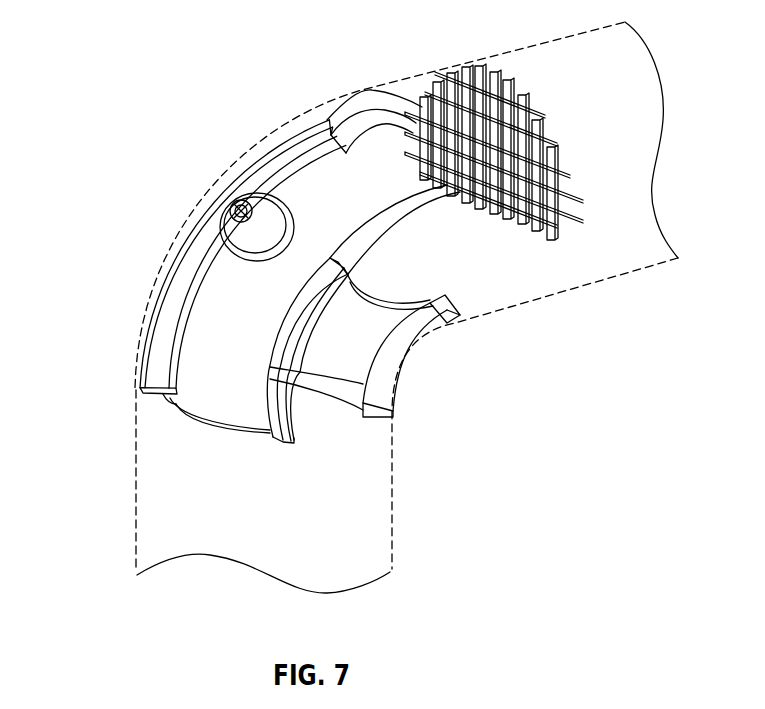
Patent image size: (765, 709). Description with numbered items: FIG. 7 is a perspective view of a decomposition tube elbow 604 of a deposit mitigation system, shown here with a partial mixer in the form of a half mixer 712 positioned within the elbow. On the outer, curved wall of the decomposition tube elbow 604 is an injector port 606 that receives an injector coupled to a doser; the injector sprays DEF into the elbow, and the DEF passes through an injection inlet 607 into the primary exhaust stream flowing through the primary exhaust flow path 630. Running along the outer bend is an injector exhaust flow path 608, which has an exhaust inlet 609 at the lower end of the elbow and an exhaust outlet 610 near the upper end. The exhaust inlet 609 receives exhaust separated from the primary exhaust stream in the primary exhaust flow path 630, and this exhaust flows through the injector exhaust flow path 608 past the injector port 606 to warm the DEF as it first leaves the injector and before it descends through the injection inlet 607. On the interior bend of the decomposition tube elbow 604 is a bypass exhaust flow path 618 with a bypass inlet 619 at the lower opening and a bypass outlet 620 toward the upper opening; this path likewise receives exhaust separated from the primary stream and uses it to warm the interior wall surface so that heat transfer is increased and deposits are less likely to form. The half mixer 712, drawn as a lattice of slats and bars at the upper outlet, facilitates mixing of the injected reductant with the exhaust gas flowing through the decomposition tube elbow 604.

The decomposition tube elbow 604 is at (166, 56).
The injector port 606 is at (236, 206).
The injection inlet 607 is at (273, 220).
The injector exhaust flow path 608 is at (170, 313).
The exhaust inlet 609 is at (175, 403).
The exhaust outlet 610 is at (370, 98).
The bypass exhaust flow path 618 is at (403, 346).
The bypass inlet 619 is at (381, 404).
The bypass outlet 620 is at (449, 307).
The primary exhaust flow path 630 is at (290, 413).
The half mixer 712 is at (545, 143).